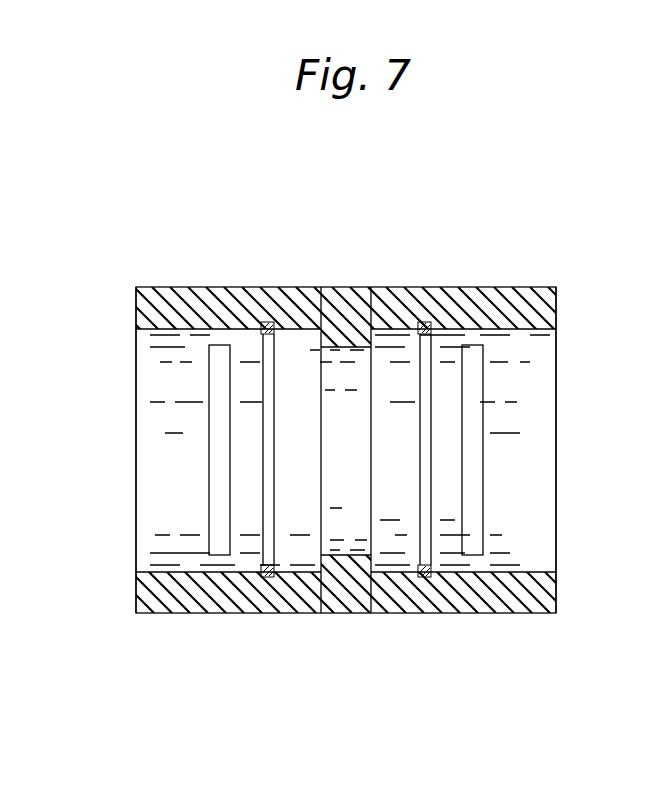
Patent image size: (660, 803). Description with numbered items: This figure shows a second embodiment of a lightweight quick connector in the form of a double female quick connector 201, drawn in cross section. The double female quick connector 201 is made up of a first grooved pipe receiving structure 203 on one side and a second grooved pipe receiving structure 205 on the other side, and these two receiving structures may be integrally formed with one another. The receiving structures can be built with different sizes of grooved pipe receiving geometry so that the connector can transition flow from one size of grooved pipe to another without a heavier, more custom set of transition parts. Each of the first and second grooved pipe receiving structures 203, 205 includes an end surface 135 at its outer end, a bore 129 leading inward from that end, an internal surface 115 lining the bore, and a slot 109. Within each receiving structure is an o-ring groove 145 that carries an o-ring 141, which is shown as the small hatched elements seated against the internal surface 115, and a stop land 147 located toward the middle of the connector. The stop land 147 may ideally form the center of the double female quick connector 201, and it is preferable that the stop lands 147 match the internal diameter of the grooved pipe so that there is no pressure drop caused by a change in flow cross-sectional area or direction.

The double female quick connector 201 is at (417, 230).
The first grooved pipe receiving structure 203 is at (158, 281).
The second grooved pipe receiving structure 205 is at (557, 281).
The slot 109 is at (213, 433).
The internal surface 115 is at (218, 330).
The bore 129 is at (173, 570).
The end surface 135 is at (137, 591).
The o-ring 141 is at (270, 334).
The o-ring groove 145 is at (274, 413).
The stop land 147 is at (371, 556).